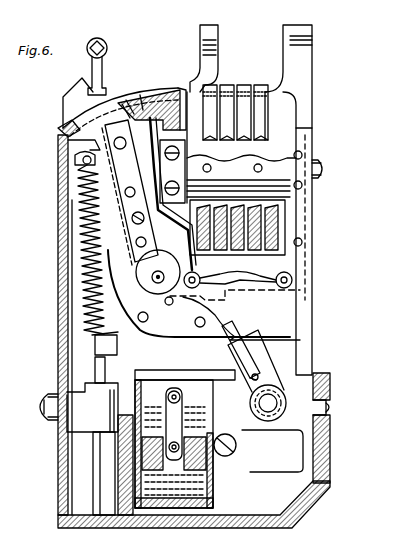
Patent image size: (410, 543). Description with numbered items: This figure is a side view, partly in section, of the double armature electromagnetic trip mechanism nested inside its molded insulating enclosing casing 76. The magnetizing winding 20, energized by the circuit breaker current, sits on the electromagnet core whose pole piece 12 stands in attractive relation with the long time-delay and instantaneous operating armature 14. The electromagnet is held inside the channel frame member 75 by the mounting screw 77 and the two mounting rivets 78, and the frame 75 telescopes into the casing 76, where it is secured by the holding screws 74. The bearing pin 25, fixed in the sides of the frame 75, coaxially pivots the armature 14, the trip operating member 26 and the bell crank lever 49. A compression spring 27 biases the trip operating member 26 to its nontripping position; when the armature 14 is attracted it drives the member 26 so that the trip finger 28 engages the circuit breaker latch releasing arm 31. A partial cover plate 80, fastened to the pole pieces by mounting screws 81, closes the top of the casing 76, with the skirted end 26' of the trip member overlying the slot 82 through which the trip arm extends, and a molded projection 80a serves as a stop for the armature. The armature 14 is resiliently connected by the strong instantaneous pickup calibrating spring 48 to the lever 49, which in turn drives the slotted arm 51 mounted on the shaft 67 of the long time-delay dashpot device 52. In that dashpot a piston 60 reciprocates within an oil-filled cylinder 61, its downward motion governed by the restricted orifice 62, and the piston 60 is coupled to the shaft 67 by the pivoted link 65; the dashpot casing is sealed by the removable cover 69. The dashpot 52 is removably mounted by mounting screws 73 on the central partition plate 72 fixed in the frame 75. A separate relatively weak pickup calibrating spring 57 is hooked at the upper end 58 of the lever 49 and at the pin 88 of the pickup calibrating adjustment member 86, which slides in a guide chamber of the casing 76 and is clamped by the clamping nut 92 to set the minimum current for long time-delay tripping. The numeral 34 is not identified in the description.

The pole piece 12 is at (178, 150).
The long time-delay and instantaneous operating armature 14 is at (124, 160).
The magnetizing winding 20 is at (244, 85).
The bearing pin 25 is at (151, 278).
The trip operating member 26 is at (168, 189).
The skirted end of the trip member 26' is at (148, 82).
The compression spring 27 is at (148, 172).
The trip finger 28 is at (72, 96).
The latch releasing arm 31 is at (104, 68).
The latch 34 is at (70, 145).
The instantaneous pickup calibrating spring 48 is at (80, 182).
The bell crank lever 49 is at (182, 322).
The slotted arm 51 is at (264, 352).
The long time-delay dashpot device 52 is at (210, 470).
The pickup calibrating spring 57 is at (82, 270).
The upper end of the bell crank lever 58 is at (76, 160).
The piston 60 is at (135, 458).
The cylinder 61 is at (127, 495).
The restricted orifice 62 is at (212, 490).
The pivoted link 65 is at (183, 397).
The shaft 67 is at (270, 400).
The removable cover 69 is at (196, 370).
The central partition plate 72 is at (300, 505).
The mounting screws 73 is at (290, 128).
The holding screws 74 is at (332, 407).
The channel frame member 75 is at (312, 318).
The enclosing casing 76 is at (58, 232).
The mounting screw 77 is at (326, 169).
The mounting rivets 78 is at (245, 276).
The partial cover plate 80 is at (160, 95).
The projection 80a is at (60, 135).
The mounting screws 81 is at (180, 92).
The slot 82 is at (127, 102).
The pickup calibrating adjustment member 86 is at (92, 407).
The pin 88 is at (105, 372).
The clamping nut 92 is at (36, 408).